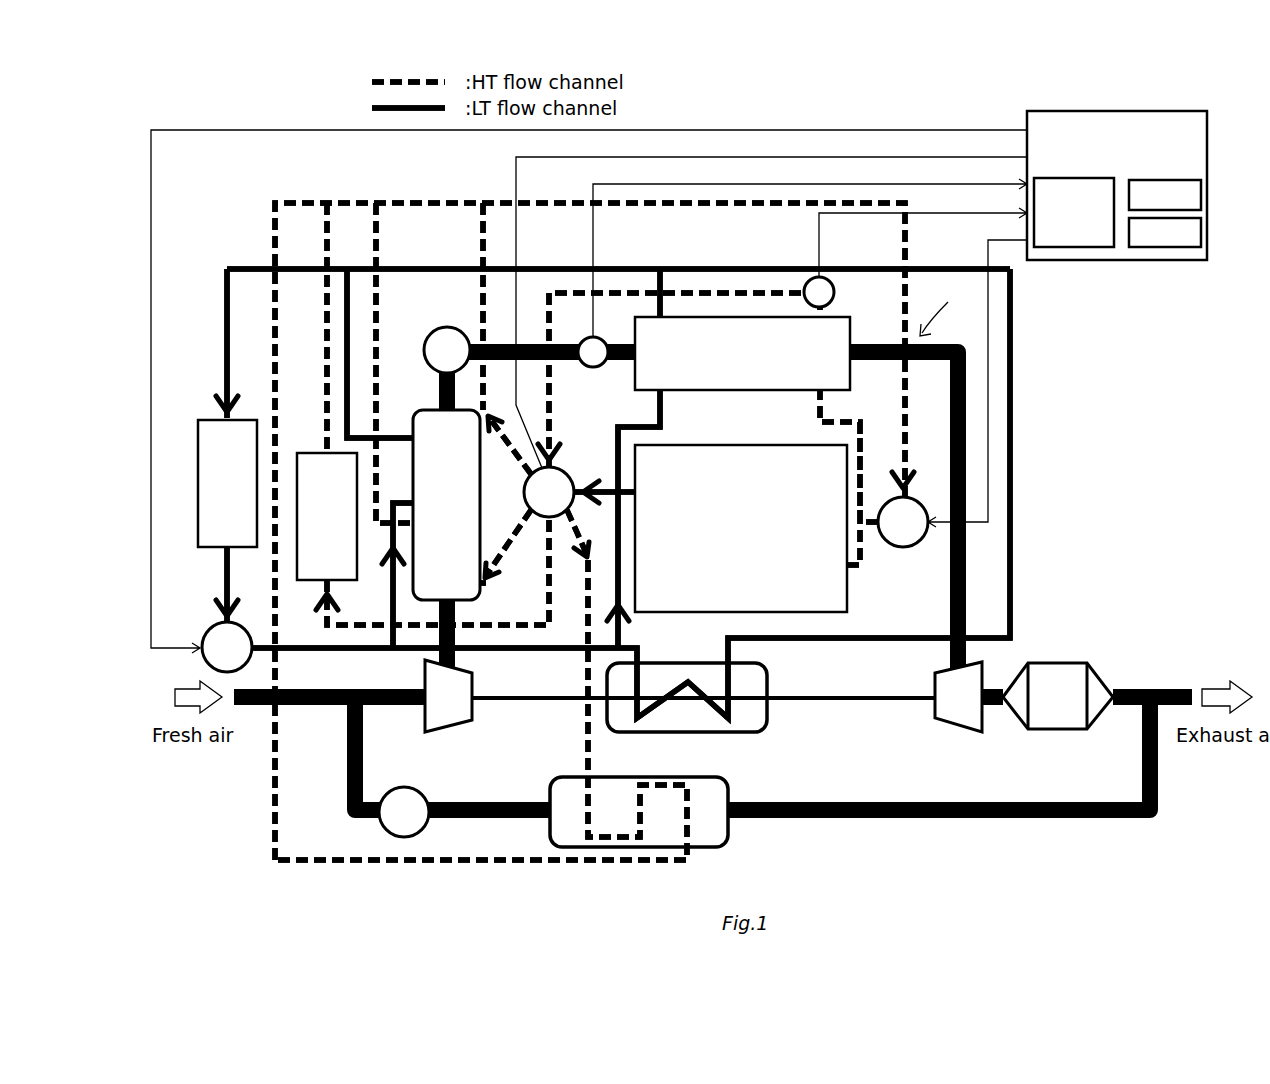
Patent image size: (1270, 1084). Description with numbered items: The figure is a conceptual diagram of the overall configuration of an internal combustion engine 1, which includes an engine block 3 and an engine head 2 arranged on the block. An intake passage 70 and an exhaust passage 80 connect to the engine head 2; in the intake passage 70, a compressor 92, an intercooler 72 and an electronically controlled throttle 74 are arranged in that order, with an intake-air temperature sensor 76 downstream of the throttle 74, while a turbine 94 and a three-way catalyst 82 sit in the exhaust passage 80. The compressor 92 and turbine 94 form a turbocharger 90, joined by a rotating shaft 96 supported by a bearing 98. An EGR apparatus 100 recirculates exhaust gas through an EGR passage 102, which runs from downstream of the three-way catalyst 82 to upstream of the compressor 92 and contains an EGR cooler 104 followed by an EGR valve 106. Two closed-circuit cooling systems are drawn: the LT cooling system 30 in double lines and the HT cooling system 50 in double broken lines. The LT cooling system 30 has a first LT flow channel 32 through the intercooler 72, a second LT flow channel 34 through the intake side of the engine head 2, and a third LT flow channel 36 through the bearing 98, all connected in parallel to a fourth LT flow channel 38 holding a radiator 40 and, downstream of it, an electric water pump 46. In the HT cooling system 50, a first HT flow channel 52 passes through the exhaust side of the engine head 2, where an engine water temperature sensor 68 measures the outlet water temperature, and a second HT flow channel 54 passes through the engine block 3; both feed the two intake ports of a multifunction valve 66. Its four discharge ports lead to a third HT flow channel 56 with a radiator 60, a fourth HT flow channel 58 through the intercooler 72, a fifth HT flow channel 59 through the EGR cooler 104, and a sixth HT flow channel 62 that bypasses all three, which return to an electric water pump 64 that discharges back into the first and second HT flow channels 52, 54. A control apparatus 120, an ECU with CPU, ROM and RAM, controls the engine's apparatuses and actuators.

The internal combustion engine 1 is at (798, 445).
The engine head 2 is at (700, 392).
The engine block 3 is at (770, 445).
The LT cooling system 30 is at (212, 340).
The first LT flow channel 32 is at (390, 606).
The second LT flow channel 34 is at (620, 424).
The third LT flow channel 36 is at (862, 636).
The fourth LT flow channel 38 is at (262, 266).
The radiator 40 is at (196, 436).
The electric water pump 46 is at (211, 630).
The HT cooling system 50 is at (268, 360).
The first HT flow channel 52 is at (836, 420).
The second HT flow channel 54 is at (603, 488).
The third HT flow channel 56 is at (545, 620).
The fourth HT flow channel 58 is at (520, 540).
The fifth HT flow channel 59 is at (585, 678).
The radiator 60 is at (300, 452).
The sixth HT flow channel 62 is at (480, 312).
The electric water pump 64 is at (903, 548).
The multifunction valve 66 is at (523, 487).
The engine water temperature sensor 68 is at (836, 292).
The intake passage 70 is at (393, 688).
The intercooler 72 is at (416, 412).
The electronically controlled throttle 74 is at (432, 335).
The intake-air temperature sensor 76 is at (600, 338).
The exhaust passage 80 is at (950, 620).
The three-way catalyst 82 is at (1055, 662).
The turbocharger 90 is at (703, 716).
The compressor 92 is at (458, 727).
The turbine 94 is at (948, 728).
The rotating shaft 96 is at (548, 704).
The bearing 98 is at (745, 733).
The EGR apparatus 100 is at (765, 840).
The EGR passage 102 is at (885, 800).
The EGR cooler 104 is at (640, 776).
The EGR valve 106 is at (404, 786).
The control apparatus 120 is at (1110, 111).